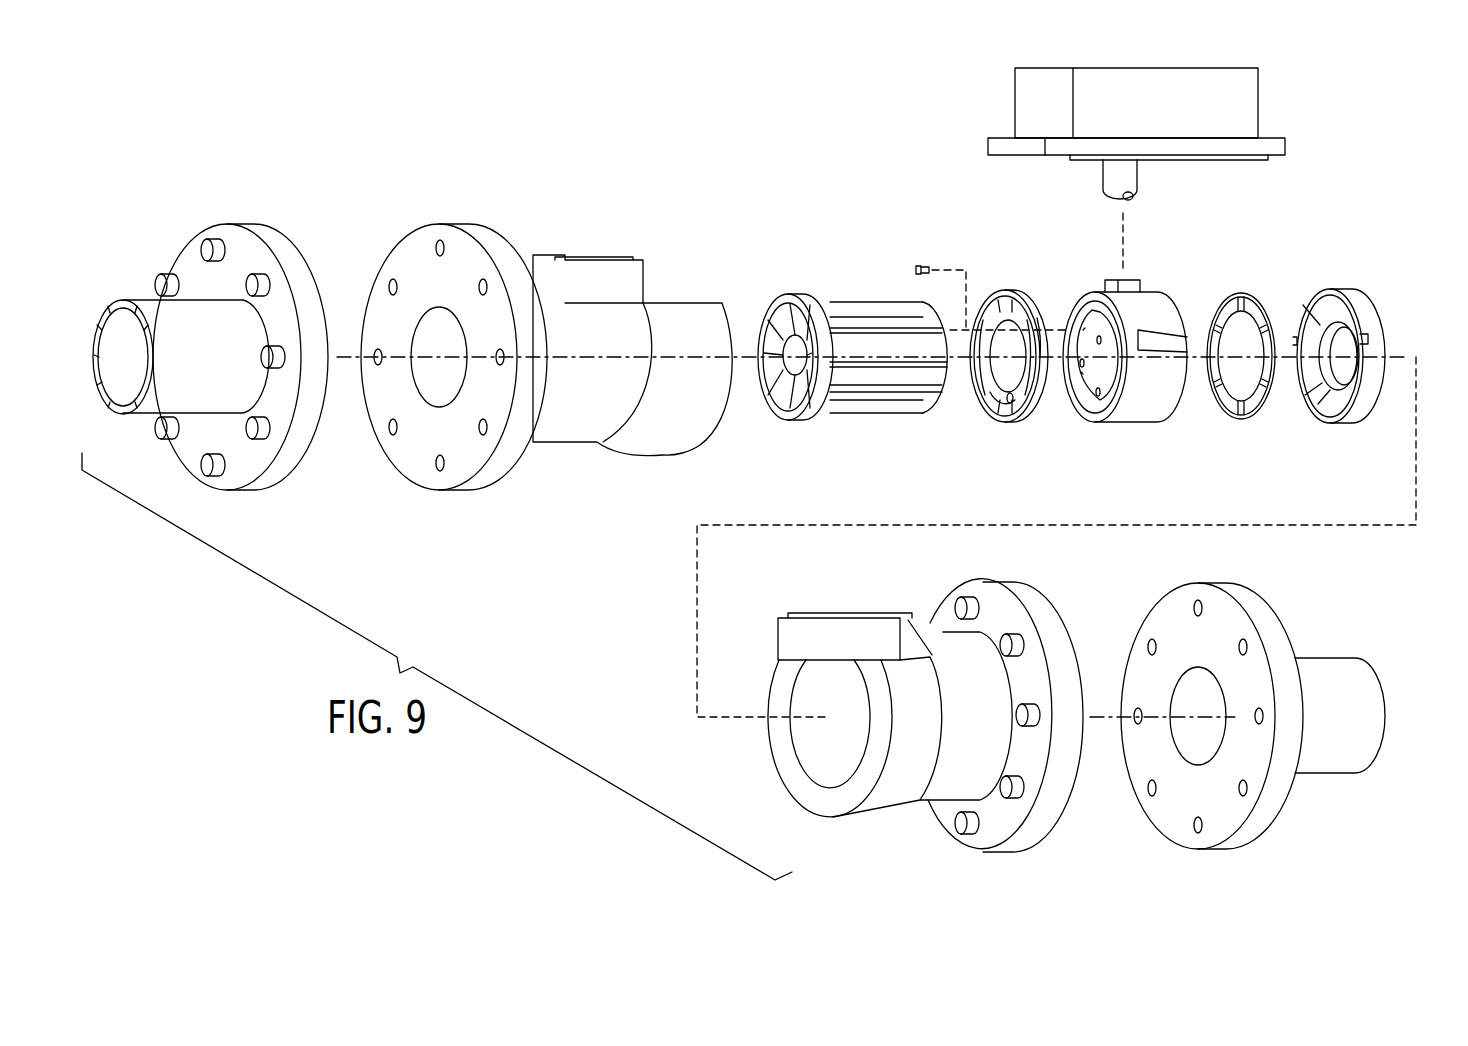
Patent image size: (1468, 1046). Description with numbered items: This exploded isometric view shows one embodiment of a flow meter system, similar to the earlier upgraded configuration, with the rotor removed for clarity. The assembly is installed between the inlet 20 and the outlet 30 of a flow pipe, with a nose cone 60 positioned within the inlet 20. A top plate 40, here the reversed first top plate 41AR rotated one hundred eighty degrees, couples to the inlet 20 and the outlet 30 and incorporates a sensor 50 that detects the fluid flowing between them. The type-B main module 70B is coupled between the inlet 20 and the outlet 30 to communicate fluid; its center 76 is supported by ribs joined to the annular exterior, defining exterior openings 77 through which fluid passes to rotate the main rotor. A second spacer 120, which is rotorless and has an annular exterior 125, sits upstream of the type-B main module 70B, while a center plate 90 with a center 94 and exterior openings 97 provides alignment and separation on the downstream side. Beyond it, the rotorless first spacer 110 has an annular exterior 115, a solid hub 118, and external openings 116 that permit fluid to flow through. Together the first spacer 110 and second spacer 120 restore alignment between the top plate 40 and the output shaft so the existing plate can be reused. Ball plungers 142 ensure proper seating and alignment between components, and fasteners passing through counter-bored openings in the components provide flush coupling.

The inlet 20 is at (531, 342).
The outlet 30 is at (927, 741).
The top plate 40 is at (1110, 114).
The reversed first top plate 41AR is at (1166, 68).
The sensor 50 is at (1115, 90).
The nose cone 60 is at (846, 262).
The type-B main module 70B is at (1087, 360).
The center 76 is at (1083, 328).
The exterior openings 77 is at (1105, 322).
The center plate 90 is at (1231, 363).
The center 94 is at (1242, 377).
The exterior openings 97 is at (1228, 312).
The first spacer 110 is at (1377, 380).
The annular exterior 115 is at (1375, 357).
The external openings 116 is at (1328, 405).
The solid hub 118 is at (1337, 340).
The second spacer 120 is at (1009, 382).
The annular exterior 125 is at (1037, 318).
The ball plungers 142 is at (996, 392).